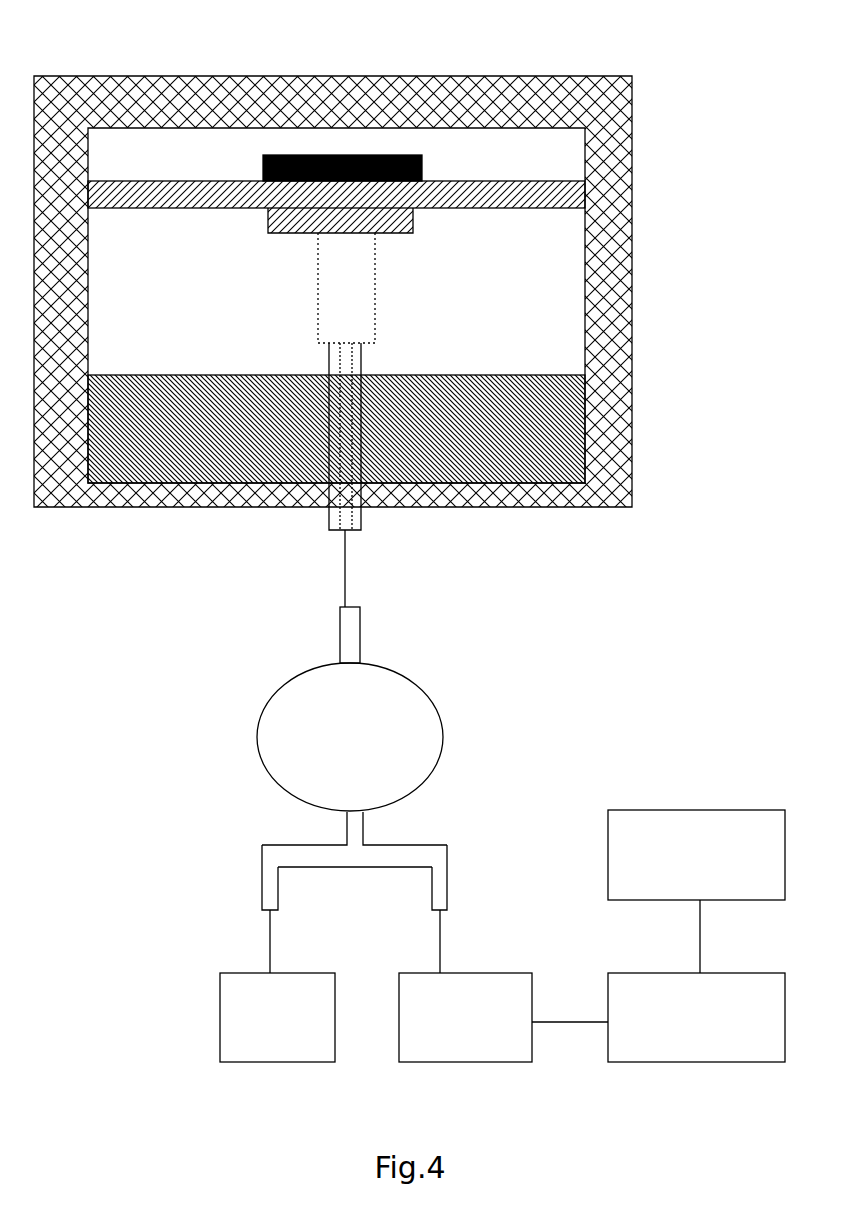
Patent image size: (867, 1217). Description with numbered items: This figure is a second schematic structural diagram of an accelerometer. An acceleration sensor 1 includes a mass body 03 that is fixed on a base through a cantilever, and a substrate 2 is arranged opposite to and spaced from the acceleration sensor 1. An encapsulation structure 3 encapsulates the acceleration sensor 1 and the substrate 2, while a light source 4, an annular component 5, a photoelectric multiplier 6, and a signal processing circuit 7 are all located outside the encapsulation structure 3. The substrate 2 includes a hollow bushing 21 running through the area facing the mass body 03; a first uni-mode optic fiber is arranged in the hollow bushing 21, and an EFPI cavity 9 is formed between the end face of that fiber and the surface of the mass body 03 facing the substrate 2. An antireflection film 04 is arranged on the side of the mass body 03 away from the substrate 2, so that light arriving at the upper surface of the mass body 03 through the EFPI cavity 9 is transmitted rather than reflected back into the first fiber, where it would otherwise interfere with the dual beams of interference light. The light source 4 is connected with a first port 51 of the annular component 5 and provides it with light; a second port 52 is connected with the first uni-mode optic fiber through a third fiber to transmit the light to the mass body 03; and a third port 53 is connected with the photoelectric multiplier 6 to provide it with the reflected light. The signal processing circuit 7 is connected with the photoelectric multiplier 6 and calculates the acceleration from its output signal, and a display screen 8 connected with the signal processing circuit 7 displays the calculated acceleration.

The acceleration sensor 1 is at (436, 181).
The substrate 2 is at (513, 400).
The encapsulation structure 3 is at (323, 100).
The light source 4 is at (265, 1062).
The annular component 5 is at (443, 737).
The photoelectric multiplier 6 is at (460, 1062).
The signal processing circuit 7 is at (715, 1062).
The display screen 8 is at (687, 810).
The EFPI cavity 9 is at (375, 310).
The mass body 03 is at (390, 235).
The antireflection film 04 is at (263, 157).
The hollow bushing 21 is at (362, 515).
The first port 51 is at (260, 912).
The second port 52 is at (360, 607).
The third port 53 is at (447, 905).